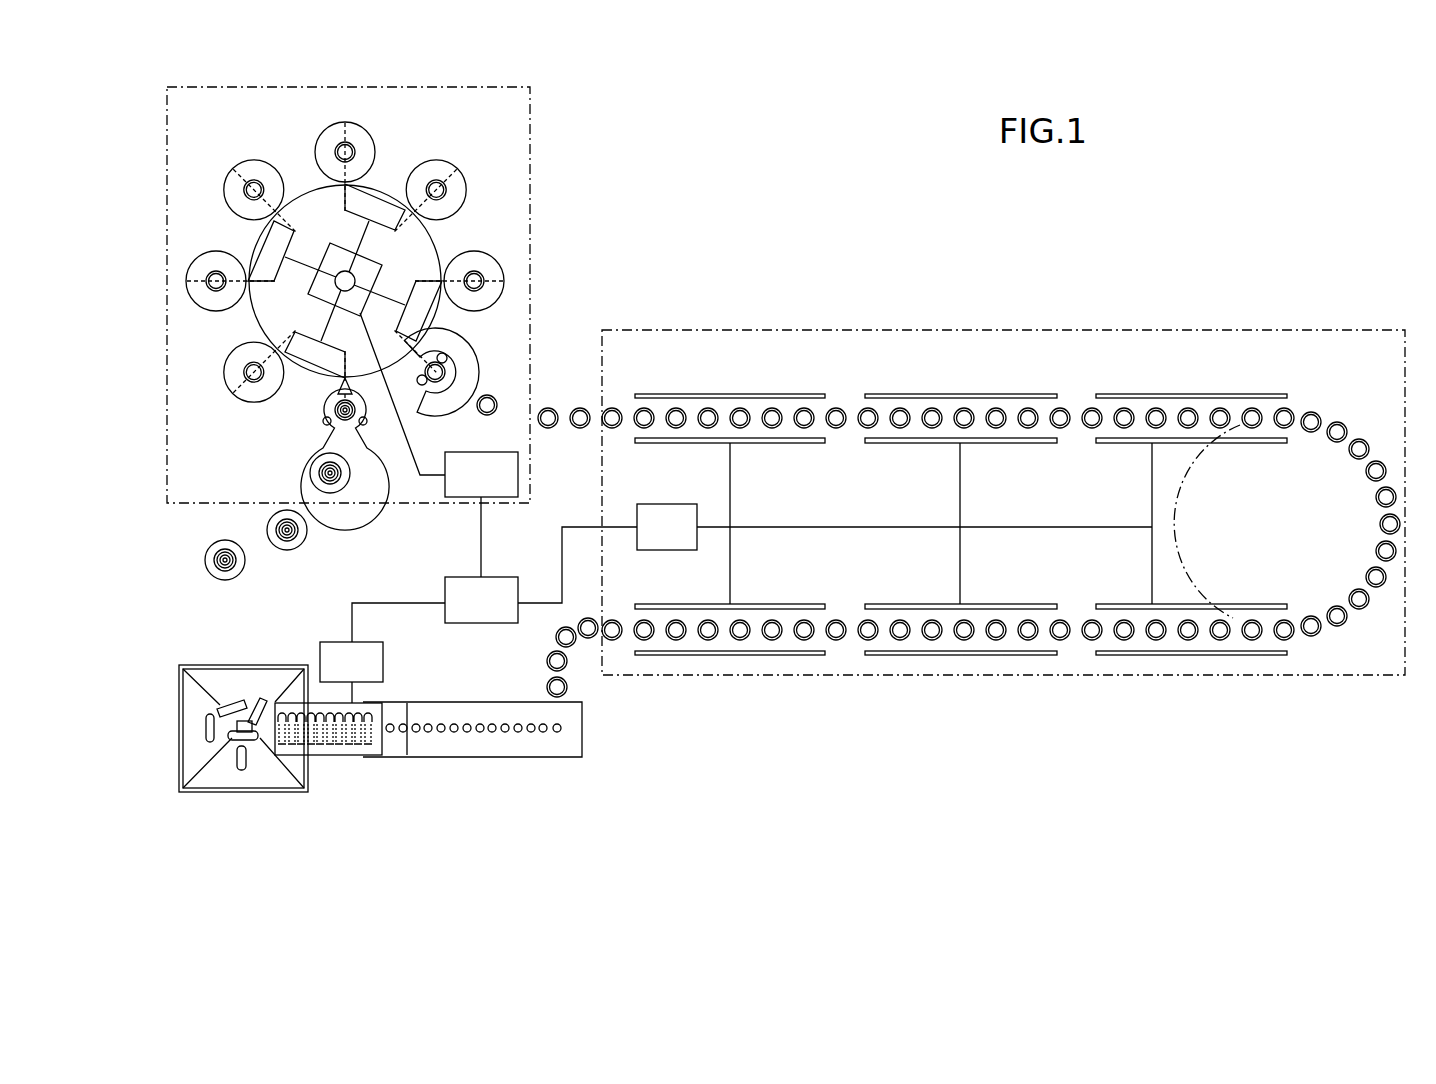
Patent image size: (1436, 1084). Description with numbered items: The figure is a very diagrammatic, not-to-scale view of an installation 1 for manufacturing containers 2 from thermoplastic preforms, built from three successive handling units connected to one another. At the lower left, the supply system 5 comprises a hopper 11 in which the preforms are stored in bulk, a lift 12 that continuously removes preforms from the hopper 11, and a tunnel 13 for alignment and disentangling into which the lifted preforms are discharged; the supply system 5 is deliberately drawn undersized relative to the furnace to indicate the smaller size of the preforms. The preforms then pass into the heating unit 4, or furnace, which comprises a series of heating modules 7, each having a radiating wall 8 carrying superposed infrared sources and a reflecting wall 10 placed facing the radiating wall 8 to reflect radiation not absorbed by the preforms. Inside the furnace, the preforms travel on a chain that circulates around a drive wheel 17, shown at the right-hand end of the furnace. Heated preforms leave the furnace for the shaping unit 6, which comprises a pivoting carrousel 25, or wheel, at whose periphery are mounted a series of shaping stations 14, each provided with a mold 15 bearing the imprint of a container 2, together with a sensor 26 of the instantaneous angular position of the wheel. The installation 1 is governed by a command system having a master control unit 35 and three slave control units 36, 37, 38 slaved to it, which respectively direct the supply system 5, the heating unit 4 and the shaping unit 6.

The installation 1 is at (812, 85).
The container 2 is at (331, 497).
The heating unit 4 is at (1219, 330).
The supply system 5 is at (431, 760).
The shaping unit 6 is at (533, 160).
The heating module 7 is at (661, 446).
The radiating wall 8 is at (772, 444).
The reflecting wall 10 is at (721, 394).
The hopper 11 is at (218, 786).
The lift 12 is at (345, 755).
The tunnel 13 is at (545, 757).
The shaping station 14 is at (354, 317).
The mold 15 is at (449, 267).
The drive wheel 17 is at (1180, 548).
The pivoting carrousel 25 is at (345, 255).
The sensor 26 is at (371, 263).
The master control unit 35 is at (468, 613).
The slave control unit 36 is at (339, 674).
The slave control unit 37 is at (655, 537).
The slave control unit 38 is at (468, 487).